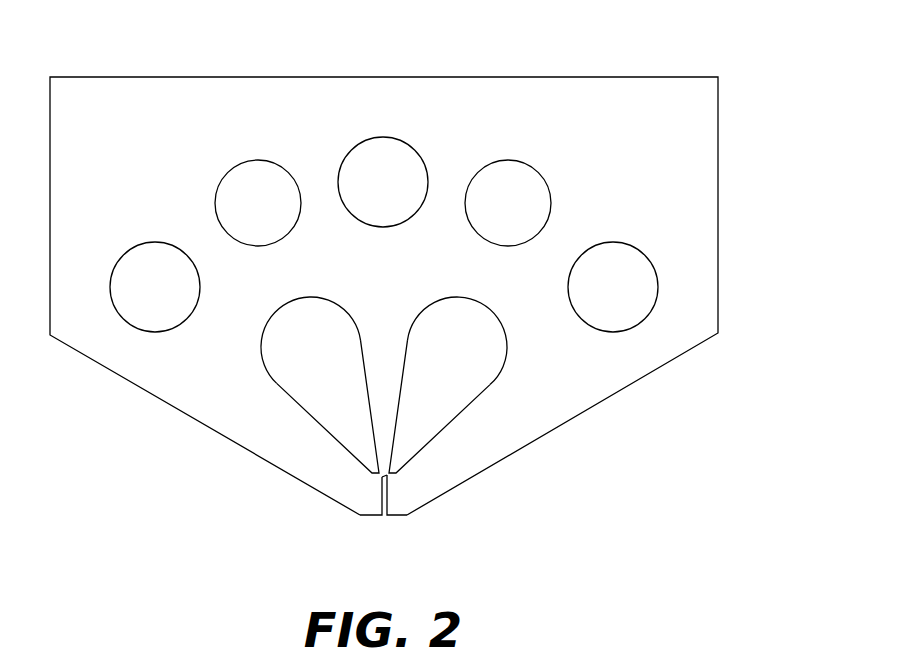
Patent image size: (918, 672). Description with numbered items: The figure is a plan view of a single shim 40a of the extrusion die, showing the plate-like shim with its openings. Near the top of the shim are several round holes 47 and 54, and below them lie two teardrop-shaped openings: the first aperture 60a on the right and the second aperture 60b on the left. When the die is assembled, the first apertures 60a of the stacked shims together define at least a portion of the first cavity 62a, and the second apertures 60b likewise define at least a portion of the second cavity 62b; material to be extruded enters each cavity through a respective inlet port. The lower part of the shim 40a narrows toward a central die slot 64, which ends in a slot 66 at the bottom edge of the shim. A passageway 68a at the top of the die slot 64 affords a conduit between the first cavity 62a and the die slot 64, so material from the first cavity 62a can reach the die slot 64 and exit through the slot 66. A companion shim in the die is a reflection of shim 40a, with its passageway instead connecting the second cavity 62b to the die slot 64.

The shim 40a is at (630, 56).
The holes 47 is at (148, 252).
The holes 54 is at (238, 180).
The first aperture 60a is at (484, 385).
The second aperture 60b is at (283, 385).
The first cavity 62a is at (497, 345).
The second cavity 62b is at (270, 345).
The die slot 64 is at (387, 505).
The slot 66 is at (383, 518).
The passageway 68a is at (388, 478).